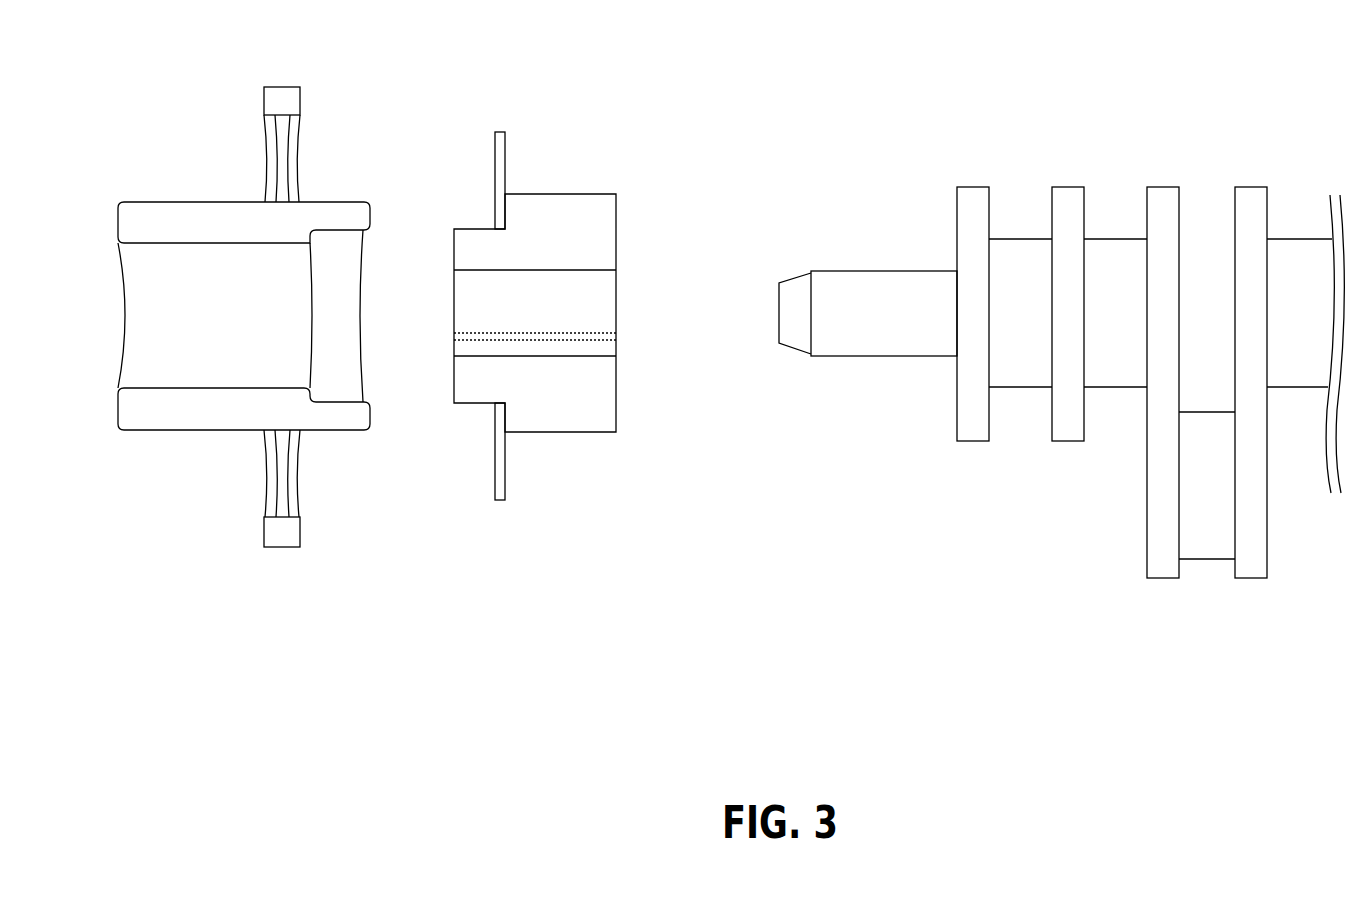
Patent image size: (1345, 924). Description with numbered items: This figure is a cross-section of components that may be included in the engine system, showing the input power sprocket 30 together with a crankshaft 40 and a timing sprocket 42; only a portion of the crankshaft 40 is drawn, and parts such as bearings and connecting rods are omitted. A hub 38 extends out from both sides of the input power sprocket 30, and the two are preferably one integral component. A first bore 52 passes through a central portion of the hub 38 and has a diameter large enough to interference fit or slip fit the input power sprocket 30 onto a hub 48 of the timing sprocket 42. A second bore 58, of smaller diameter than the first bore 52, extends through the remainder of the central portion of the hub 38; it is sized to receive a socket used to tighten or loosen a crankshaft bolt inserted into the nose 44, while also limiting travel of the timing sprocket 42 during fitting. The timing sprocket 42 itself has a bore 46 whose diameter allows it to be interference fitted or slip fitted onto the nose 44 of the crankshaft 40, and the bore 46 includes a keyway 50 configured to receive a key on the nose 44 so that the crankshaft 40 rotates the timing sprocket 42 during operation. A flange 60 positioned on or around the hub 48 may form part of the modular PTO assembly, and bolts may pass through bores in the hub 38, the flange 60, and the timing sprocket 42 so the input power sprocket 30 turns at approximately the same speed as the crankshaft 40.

The input power sprocket 30 is at (193, 114).
The hub 38 is at (162, 202).
The first bore 52 is at (324, 329).
The second bore 58 is at (189, 329).
The timing sprocket 42 is at (607, 97).
The bore 46 is at (549, 312).
The hub 48 is at (470, 229).
The keyway 50 is at (614, 340).
The flange 60 is at (498, 132).
The crankshaft 40 is at (1243, 80).
The nose 44 is at (836, 271).